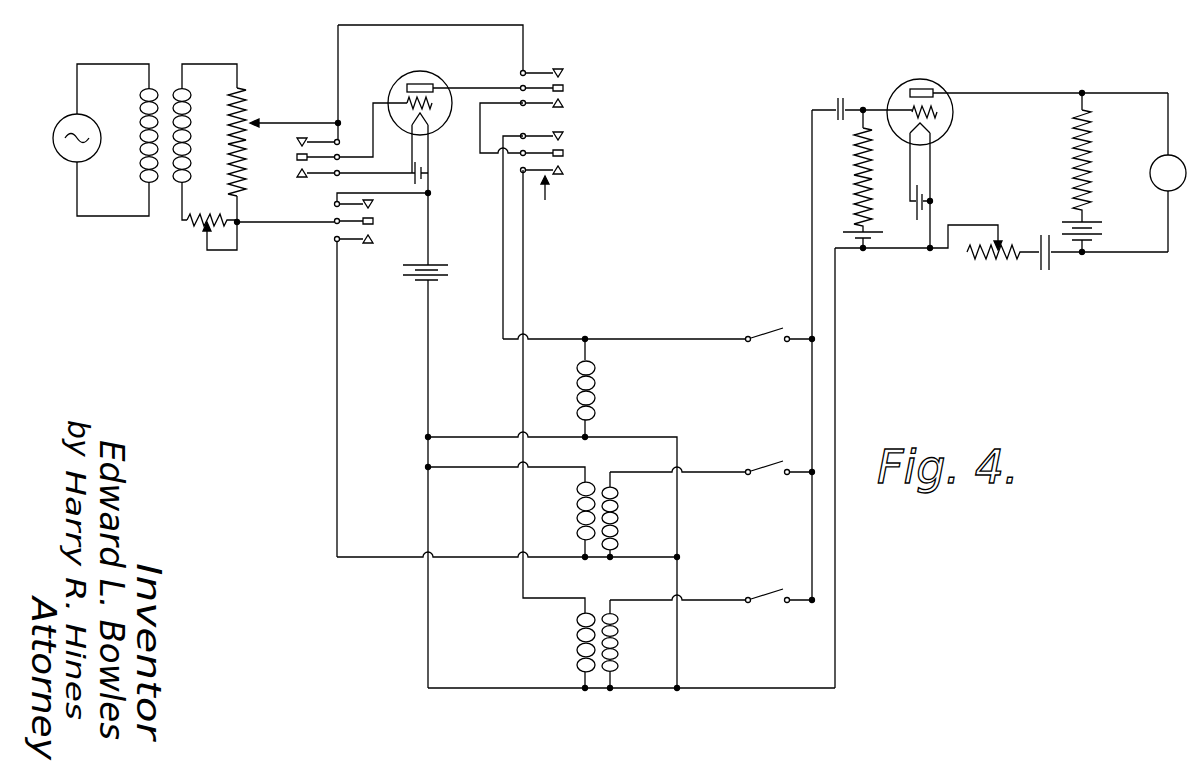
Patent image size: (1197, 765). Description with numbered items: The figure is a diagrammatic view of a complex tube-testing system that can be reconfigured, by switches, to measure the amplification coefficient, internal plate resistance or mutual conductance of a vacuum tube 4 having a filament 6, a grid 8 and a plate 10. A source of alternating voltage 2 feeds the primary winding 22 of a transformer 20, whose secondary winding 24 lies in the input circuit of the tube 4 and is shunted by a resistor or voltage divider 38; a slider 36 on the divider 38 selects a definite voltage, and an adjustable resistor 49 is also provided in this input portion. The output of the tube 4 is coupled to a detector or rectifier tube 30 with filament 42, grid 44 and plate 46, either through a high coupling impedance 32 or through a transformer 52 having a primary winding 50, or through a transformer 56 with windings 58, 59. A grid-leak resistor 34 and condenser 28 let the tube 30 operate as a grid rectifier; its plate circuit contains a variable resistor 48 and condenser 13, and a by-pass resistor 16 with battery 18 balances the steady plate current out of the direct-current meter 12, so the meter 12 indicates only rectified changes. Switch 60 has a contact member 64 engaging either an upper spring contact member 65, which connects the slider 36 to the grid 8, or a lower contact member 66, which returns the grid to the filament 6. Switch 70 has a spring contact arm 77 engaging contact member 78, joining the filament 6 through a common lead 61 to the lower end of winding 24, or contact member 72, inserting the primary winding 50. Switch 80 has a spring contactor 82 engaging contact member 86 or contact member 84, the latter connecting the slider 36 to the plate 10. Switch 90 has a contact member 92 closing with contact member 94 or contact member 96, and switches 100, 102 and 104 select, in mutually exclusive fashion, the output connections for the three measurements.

The source of alternating voltage 2 is at (71, 161).
The vacuum tube 4 is at (405, 153).
The filament 6 is at (436, 122).
The grid 8 is at (405, 103).
The plate 10 is at (430, 84).
The meter 12 is at (1151, 182).
The condenser 13 is at (1046, 274).
The by-pass resistor 16 is at (1093, 134).
The battery 18 is at (1102, 228).
The transformer 20 is at (165, 195).
The primary winding 22 is at (140, 119).
The secondary winding 24 is at (190, 138).
The condenser 28 is at (840, 95).
The detector or rectifier tube 30 is at (927, 148).
The coupling impedance 32 is at (597, 386).
The grid-leak resistor 34 is at (856, 192).
The slider 36 is at (294, 121).
The resistor or voltage divider 38 is at (247, 92).
The filament 42 is at (935, 131).
The grid 44 is at (911, 111).
The plate 46 is at (923, 88).
The variable resistor 48 is at (990, 262).
The resistor 49 is at (197, 228).
The primary winding 50 is at (576, 519).
The transformer 52 is at (599, 480).
The transformer 56 is at (626, 630).
The transformer winding 58 is at (576, 652).
The transformer winding 59 is at (620, 649).
The switch 60 is at (290, 164).
The common lead 61 is at (284, 224).
The contact member 64 is at (296, 158).
The upper spring contact member 65 is at (297, 142).
The lower contact member 66 is at (302, 179).
The switch 70 is at (376, 222).
The contact member 72 is at (368, 246).
The spring contact arm 77 is at (333, 236).
The contact member 78 is at (375, 205).
The switch 80 is at (521, 82).
The spring contactor 82 is at (566, 90).
The contact member 84 is at (566, 78).
The contact member 86 is at (567, 106).
The switch 90 is at (550, 198).
The contact member 92 is at (570, 154).
The contact member 94 is at (572, 138).
The contact member 96 is at (568, 174).
The switch 100 is at (790, 334).
The switch 102 is at (790, 466).
The switch 104 is at (790, 595).